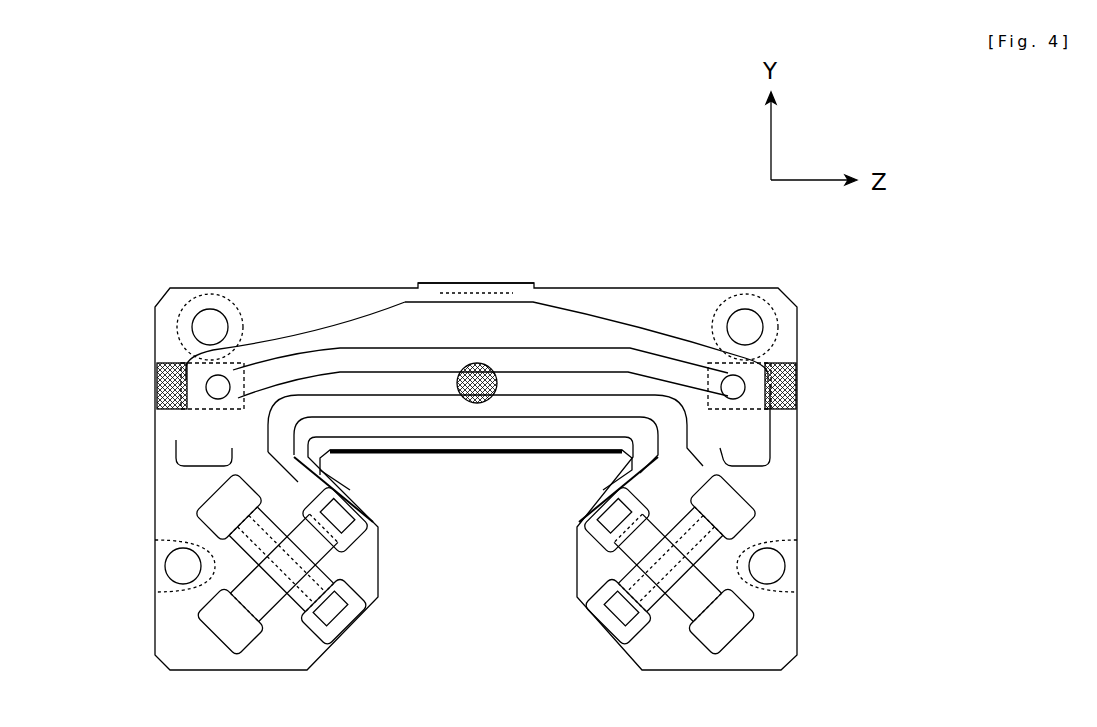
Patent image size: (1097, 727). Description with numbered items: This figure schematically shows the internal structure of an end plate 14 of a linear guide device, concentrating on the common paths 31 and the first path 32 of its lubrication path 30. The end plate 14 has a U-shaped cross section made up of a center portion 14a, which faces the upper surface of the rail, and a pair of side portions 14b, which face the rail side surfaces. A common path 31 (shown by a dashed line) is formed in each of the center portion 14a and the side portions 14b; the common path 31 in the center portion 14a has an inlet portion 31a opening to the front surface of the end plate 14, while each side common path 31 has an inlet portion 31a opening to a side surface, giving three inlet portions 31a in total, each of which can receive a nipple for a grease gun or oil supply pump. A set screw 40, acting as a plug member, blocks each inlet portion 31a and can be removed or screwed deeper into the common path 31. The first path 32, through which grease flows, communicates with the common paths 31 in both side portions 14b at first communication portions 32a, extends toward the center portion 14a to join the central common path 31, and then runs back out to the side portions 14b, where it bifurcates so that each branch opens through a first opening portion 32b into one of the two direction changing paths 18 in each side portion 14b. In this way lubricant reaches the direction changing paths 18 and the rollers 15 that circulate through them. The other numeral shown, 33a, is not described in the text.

The end plate 14 is at (919, 243).
The center portion 14a is at (592, 306).
The side portions 14b is at (778, 510).
The rollers 15 is at (205, 518).
The direction changing paths 18 is at (282, 600).
The lubrication path 30 is at (352, 346).
The common paths 31 is at (168, 415).
The inlet portions 31a is at (157, 380).
The first path 32 is at (515, 353).
The first communication portions 32a is at (265, 345).
The first opening portion 32b is at (300, 465).
The mounting hole 33a is at (166, 308).
The set screw 40 is at (458, 367).